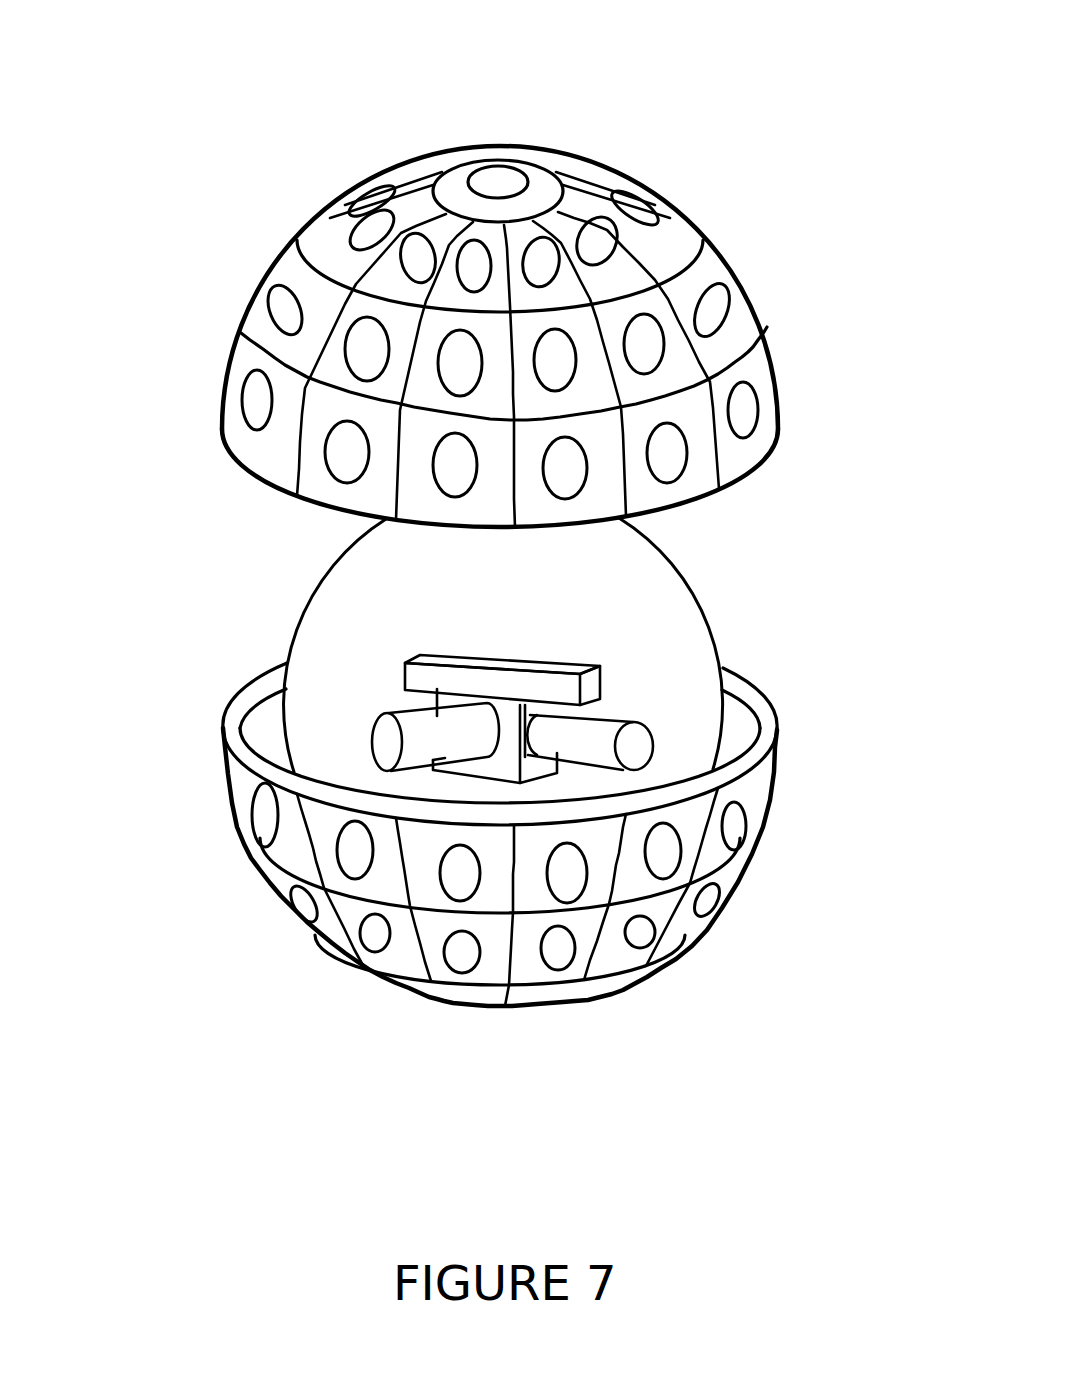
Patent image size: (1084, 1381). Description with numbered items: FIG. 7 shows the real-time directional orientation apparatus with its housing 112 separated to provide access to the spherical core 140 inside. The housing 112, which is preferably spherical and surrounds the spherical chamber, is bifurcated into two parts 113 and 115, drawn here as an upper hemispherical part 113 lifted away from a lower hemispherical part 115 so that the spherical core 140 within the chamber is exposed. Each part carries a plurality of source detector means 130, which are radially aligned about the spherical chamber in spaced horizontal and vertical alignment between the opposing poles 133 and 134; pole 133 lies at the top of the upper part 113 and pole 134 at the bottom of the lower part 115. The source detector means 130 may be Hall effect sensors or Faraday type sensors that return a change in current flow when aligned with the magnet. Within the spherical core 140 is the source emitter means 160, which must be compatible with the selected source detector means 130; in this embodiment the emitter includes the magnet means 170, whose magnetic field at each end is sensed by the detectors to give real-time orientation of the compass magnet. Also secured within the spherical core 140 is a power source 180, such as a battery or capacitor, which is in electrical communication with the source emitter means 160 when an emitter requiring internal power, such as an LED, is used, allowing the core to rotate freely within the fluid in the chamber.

The housing 112 is at (752, 486).
The first part of the housing 113 is at (298, 233).
The second part of the housing 115 is at (272, 883).
The source detector means 130 is at (283, 307).
The pole 133 is at (498, 182).
The pole 134 is at (499, 1008).
The spherical core 140 is at (296, 626).
The source emitter means 160 is at (394, 747).
The magnet means 170 is at (509, 664).
The power source 180 is at (453, 705).